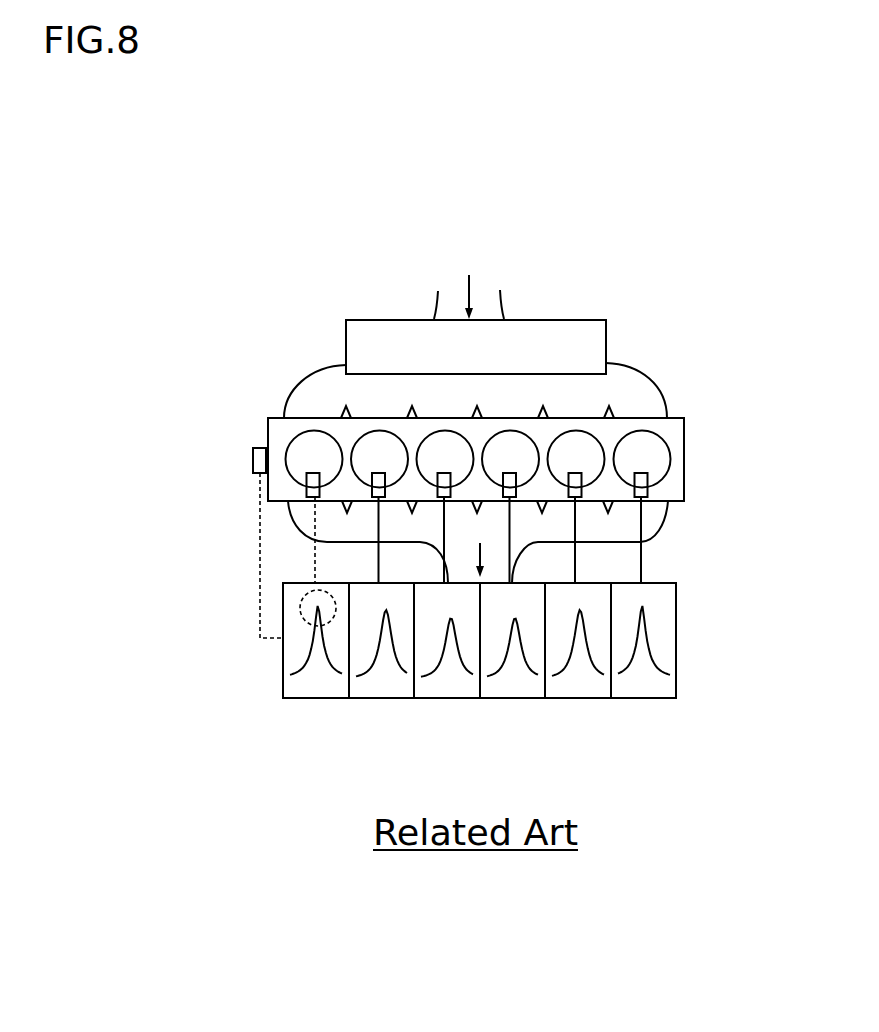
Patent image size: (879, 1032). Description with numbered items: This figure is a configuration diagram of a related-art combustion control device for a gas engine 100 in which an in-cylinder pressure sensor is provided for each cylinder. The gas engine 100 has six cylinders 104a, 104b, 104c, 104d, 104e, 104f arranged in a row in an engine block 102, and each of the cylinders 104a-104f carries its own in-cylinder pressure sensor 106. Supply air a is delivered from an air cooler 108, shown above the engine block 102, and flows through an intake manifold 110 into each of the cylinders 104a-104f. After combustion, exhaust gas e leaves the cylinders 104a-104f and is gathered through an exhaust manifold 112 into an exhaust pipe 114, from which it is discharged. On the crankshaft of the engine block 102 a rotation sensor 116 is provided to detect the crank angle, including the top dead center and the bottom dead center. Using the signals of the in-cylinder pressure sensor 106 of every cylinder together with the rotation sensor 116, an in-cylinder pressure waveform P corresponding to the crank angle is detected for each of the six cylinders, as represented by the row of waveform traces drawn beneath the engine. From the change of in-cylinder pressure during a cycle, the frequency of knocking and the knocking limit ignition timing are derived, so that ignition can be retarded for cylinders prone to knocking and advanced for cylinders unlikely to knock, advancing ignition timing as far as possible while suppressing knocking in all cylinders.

The gas engine 100 is at (573, 229).
The engine block 102 is at (684, 466).
The cylinder 104a is at (303, 432).
The cylinder 104b is at (383, 432).
The cylinder 104c is at (448, 432).
The cylinder 104d is at (512, 430).
The cylinder 104e is at (577, 430).
The cylinder 104f is at (667, 440).
The in-cylinder pressure sensor 106 is at (369, 490).
The air cooler 108 is at (606, 341).
The intake manifold 110 is at (648, 366).
The exhaust manifold 112 is at (668, 515).
The exhaust pipe 114 is at (518, 550).
The rotation sensor 116 is at (253, 458).
The supply air a is at (470, 285).
The exhaust gas e is at (480, 550).
The in-cylinder pressure waveform P is at (650, 630).